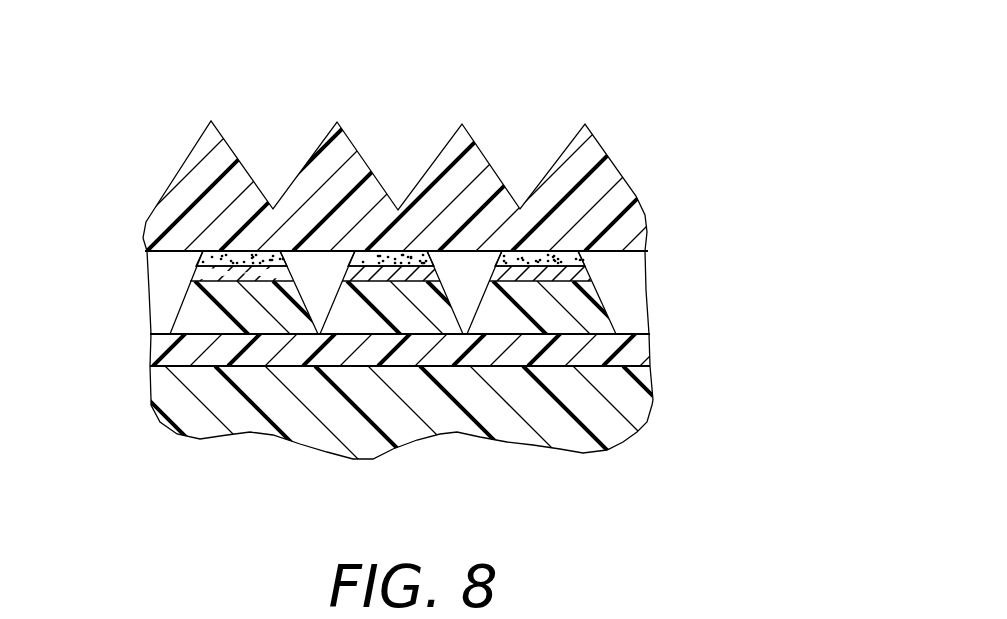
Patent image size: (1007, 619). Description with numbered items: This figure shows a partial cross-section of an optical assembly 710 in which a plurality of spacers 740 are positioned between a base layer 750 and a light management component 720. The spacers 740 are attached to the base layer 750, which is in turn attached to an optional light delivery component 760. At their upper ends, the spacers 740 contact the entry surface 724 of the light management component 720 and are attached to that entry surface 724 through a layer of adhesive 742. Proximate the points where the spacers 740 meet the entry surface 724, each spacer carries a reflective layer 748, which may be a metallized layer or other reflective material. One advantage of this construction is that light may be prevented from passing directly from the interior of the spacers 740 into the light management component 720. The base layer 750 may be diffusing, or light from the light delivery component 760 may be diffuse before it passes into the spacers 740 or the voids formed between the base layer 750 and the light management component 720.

The optical assembly 710 is at (630, 78).
The light management component 720 is at (607, 177).
The layer of adhesive 742 is at (247, 258).
The reflective layer 748 is at (197, 270).
The spacers 740 is at (215, 316).
The entry surface 724 is at (308, 251).
The base layer 750 is at (628, 345).
The light delivery component 760 is at (617, 431).